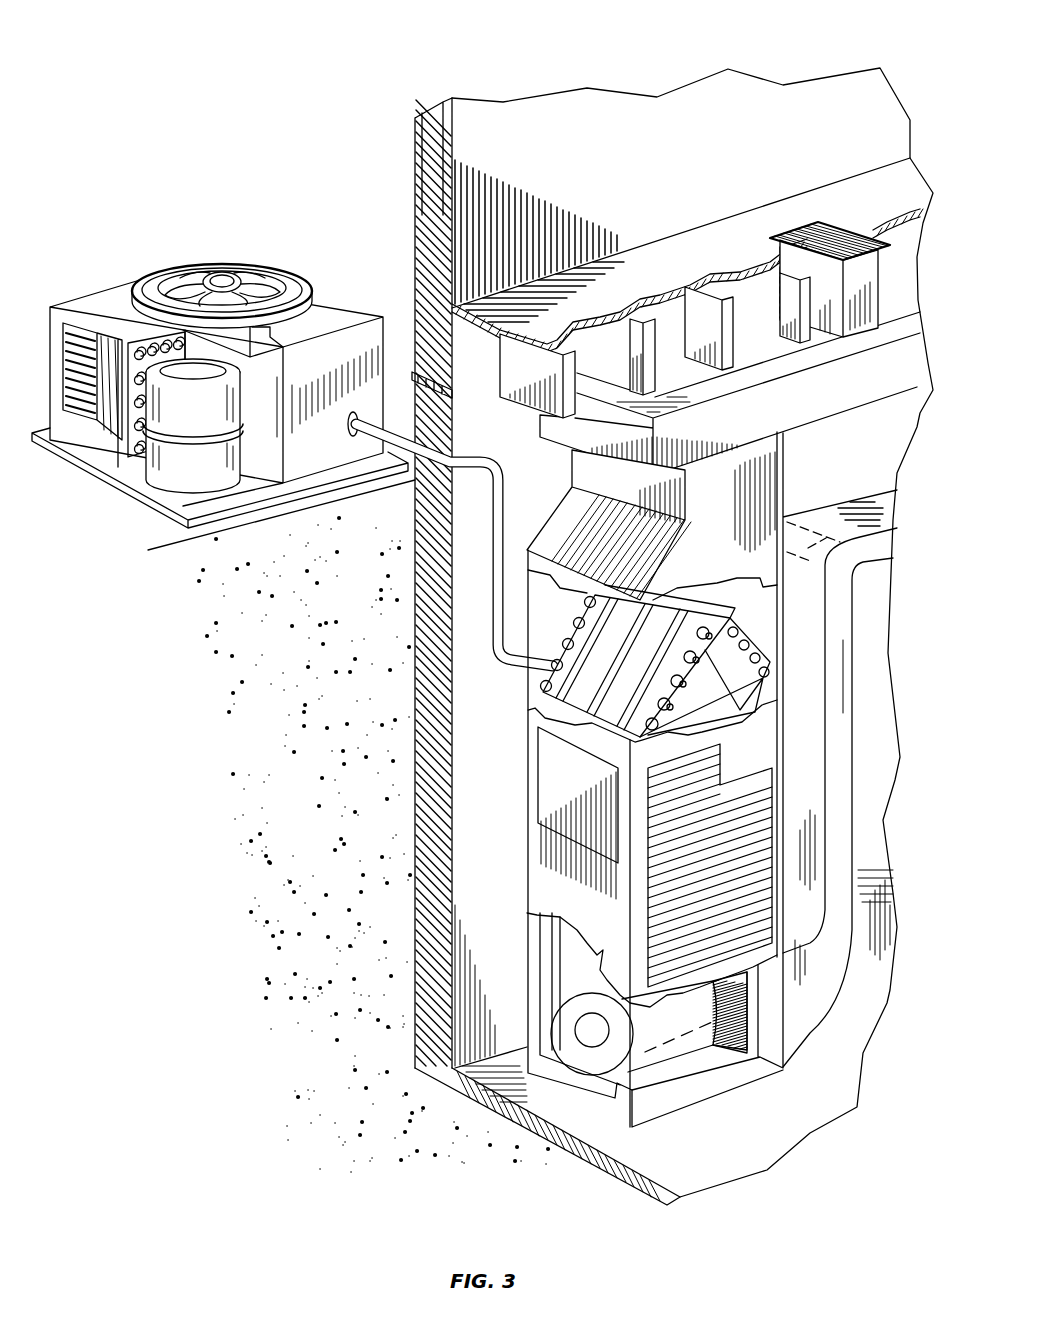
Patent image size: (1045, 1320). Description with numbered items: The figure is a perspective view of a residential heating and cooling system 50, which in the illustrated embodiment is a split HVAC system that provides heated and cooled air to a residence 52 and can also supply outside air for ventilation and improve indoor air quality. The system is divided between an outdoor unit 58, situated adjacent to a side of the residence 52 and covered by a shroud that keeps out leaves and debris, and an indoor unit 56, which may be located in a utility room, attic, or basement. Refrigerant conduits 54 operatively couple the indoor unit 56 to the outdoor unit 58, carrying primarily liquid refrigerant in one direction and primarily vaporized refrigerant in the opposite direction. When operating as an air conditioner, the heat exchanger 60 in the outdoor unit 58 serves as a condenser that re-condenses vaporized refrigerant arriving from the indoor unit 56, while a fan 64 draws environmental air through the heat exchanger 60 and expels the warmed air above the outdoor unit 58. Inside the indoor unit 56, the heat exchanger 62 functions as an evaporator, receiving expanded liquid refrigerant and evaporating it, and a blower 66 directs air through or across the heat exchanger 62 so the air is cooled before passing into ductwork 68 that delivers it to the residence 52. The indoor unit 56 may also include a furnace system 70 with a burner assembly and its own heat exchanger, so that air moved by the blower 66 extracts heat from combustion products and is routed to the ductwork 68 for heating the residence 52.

The residential heating and cooling system 50 is at (336, 42).
The residence 52 is at (575, 104).
The refrigerant conduits 54 is at (490, 523).
The indoor unit 56 is at (505, 825).
The outdoor unit 58 is at (160, 255).
The heat exchanger 60 is at (142, 338).
The heat exchanger 62 is at (600, 695).
The fan 64 is at (246, 278).
The blower 66 is at (582, 1055).
The ductwork 68 is at (900, 360).
The furnace system 70 is at (538, 760).